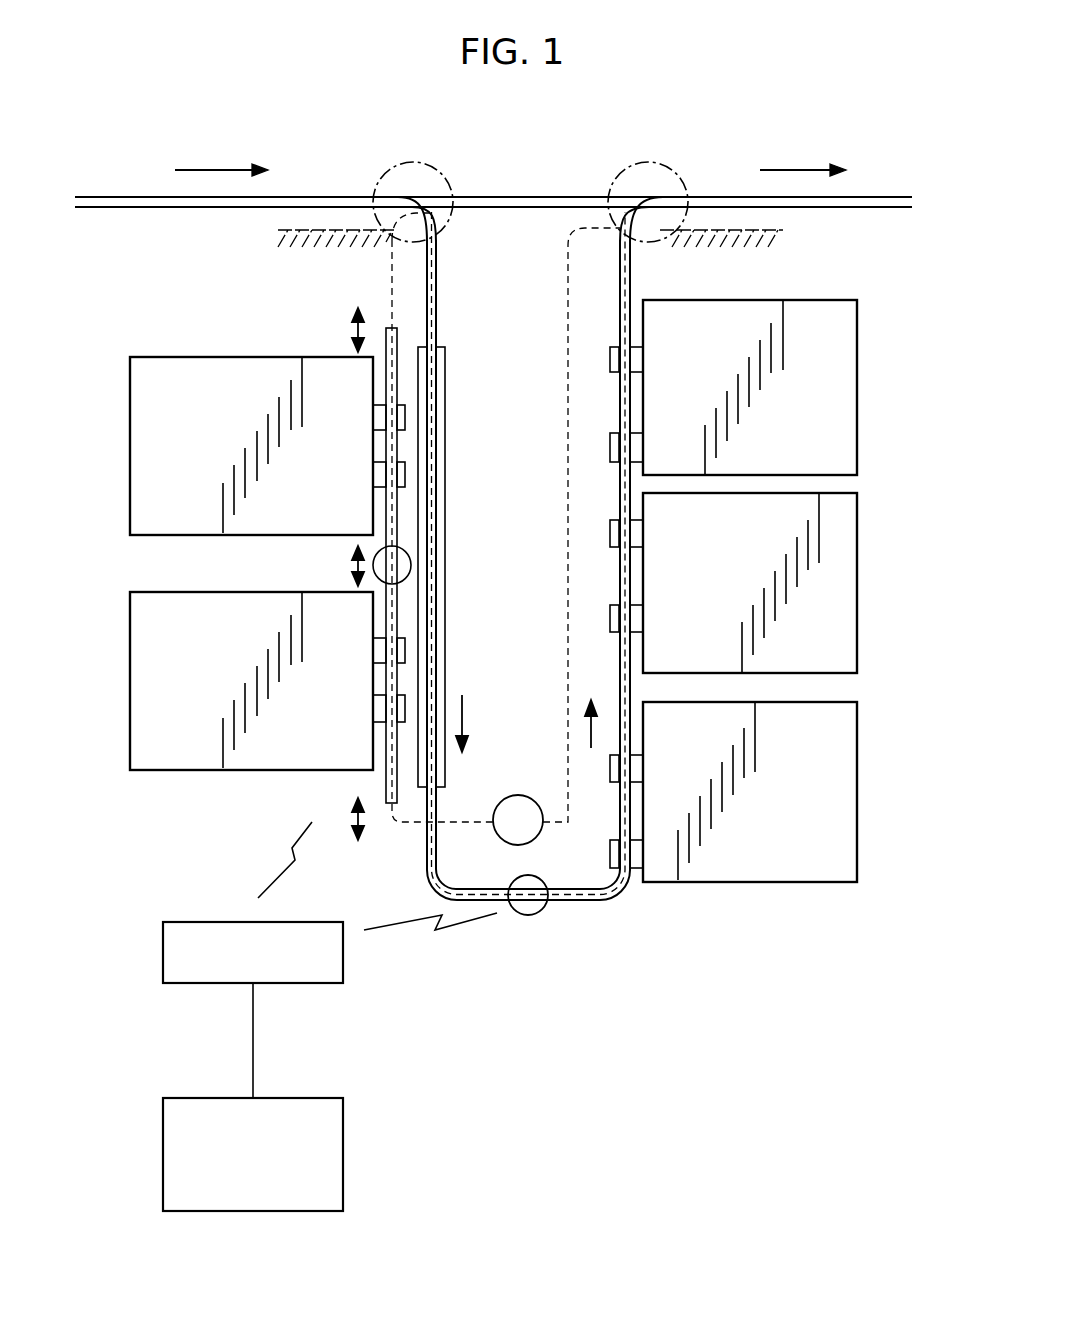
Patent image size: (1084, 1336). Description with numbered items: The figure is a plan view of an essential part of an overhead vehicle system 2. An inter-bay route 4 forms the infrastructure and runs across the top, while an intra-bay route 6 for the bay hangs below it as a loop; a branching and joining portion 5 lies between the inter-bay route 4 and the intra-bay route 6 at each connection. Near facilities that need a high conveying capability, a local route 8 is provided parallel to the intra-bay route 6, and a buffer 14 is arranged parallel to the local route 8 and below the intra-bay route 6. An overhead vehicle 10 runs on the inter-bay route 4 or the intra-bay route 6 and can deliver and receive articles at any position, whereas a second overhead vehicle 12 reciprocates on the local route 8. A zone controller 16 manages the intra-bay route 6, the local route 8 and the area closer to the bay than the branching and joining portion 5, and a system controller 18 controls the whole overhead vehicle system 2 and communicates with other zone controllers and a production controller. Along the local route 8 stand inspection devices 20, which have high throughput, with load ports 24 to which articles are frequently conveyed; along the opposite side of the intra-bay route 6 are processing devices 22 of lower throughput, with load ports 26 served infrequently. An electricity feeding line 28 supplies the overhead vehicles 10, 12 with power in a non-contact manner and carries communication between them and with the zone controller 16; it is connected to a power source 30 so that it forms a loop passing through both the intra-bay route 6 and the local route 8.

The overhead vehicle system 2 is at (553, 1068).
The inter-bay route 4 is at (876, 197).
The branching and joining portion 5 is at (425, 164).
The intra-bay route 6 is at (632, 264).
The local route 8 is at (390, 328).
The overhead vehicle 10 is at (533, 917).
The overhead vehicle 12 is at (412, 560).
The buffer 14 is at (446, 603).
The zone controller 16 is at (343, 960).
The system controller 18 is at (343, 1131).
The inspection device 20 is at (215, 357).
The processing device 22 is at (857, 340).
The load port 24 is at (407, 475).
The load port 26 is at (608, 447).
The electricity feeding line 28 is at (568, 283).
The power source 30 is at (512, 795).